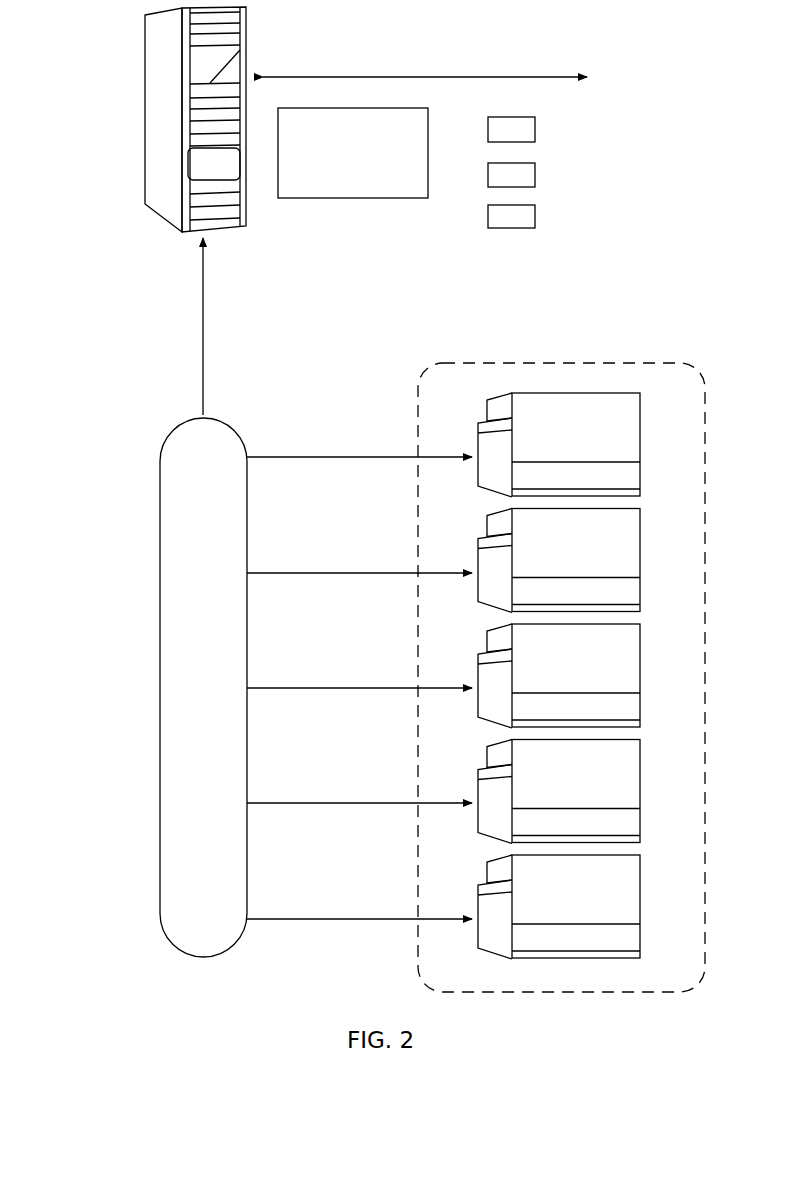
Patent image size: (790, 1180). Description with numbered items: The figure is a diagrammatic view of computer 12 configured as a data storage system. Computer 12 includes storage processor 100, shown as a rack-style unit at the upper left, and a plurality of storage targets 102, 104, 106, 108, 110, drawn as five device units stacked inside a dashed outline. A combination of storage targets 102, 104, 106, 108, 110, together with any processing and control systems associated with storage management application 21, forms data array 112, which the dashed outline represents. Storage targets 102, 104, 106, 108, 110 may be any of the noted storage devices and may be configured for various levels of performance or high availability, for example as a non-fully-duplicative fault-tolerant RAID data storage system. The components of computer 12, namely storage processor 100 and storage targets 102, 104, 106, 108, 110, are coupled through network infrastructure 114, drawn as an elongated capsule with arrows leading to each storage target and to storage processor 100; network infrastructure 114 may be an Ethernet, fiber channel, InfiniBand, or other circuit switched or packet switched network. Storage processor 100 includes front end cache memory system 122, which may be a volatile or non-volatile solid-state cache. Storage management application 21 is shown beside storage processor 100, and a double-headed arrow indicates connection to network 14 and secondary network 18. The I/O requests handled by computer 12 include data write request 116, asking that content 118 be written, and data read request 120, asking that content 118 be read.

The computer 12 is at (58, 41).
The network 14 is at (624, 108).
The secondary network 18 is at (670, 108).
The storage management application 21 is at (393, 198).
The storage processor 100 is at (135, 137).
The storage target 102 is at (643, 427).
The storage target 104 is at (645, 543).
The storage target 106 is at (645, 659).
The storage target 108 is at (645, 774).
The storage target 110 is at (645, 890).
The data array 112 is at (417, 413).
The network infrastructure 114 is at (217, 700).
The data write request 116 is at (487, 130).
The content 118 is at (487, 176).
The data read request 120 is at (487, 218).
The front end cache memory system 122 is at (229, 176).